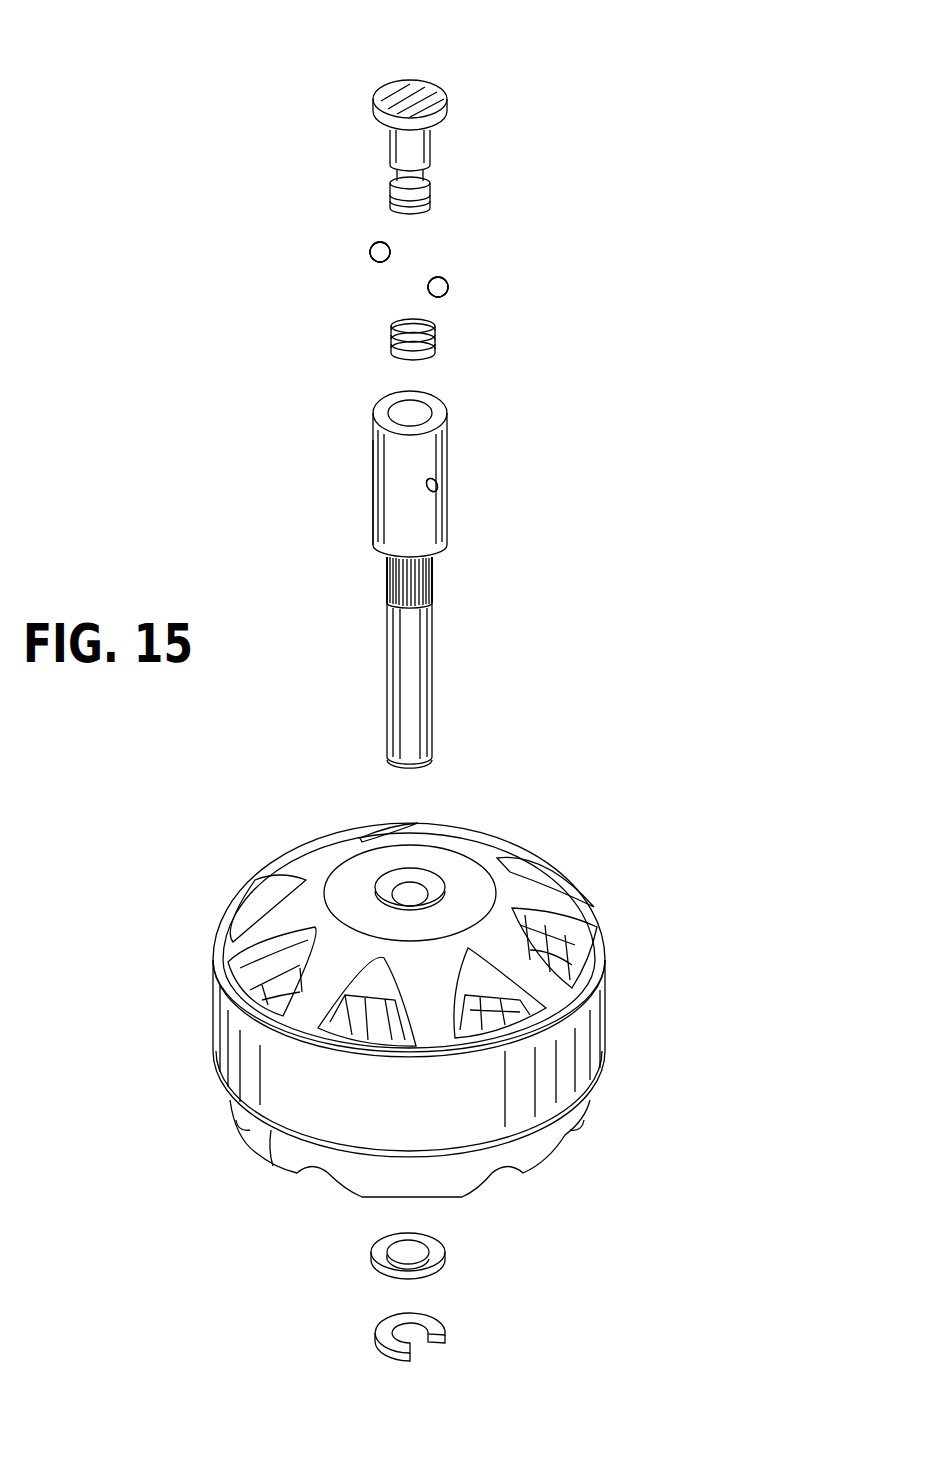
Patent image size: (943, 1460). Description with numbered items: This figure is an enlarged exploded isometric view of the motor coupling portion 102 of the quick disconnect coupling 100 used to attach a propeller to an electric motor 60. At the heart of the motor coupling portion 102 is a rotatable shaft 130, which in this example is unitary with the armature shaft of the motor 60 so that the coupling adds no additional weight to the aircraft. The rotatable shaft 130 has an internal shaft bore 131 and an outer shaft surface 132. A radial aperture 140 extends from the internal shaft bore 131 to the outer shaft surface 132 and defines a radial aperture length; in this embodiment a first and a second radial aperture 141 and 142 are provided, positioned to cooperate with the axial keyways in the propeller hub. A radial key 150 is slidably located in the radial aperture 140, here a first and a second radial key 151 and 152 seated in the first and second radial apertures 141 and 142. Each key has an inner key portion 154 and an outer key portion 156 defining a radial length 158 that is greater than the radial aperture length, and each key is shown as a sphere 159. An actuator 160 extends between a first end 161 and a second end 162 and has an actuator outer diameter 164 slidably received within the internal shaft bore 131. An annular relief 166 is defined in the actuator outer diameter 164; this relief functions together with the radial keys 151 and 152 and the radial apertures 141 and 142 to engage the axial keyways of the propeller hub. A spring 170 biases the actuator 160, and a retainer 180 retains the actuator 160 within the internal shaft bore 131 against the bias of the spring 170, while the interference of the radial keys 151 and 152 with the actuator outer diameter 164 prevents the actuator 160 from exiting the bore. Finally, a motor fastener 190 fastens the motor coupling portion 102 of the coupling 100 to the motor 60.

The electric motor 60 is at (605, 1008).
The coupling 100 is at (641, 264).
The motor coupling portion 102 is at (172, 480).
The rotatable shaft 130 is at (413, 574).
The internal shaft bore 131 is at (393, 410).
The outer shaft surface 132 is at (380, 523).
The radial aperture 140 is at (437, 490).
The first radial aperture 141 is at (437, 480).
The second radial aperture 142 is at (380, 463).
The radial key 150 is at (262, 308).
The first radial key 151 is at (445, 278).
The second radial key 152 is at (377, 245).
The inner key portion 154 is at (383, 260).
The outer key portion 156 is at (446, 296).
The radial length 158 is at (449, 287).
The sphere 159 is at (370, 252).
The actuator 160 is at (408, 118).
The first end 161 is at (393, 82).
The second end 162 is at (430, 205).
The actuator outer diameter 164 is at (390, 140).
The annular relief 166 is at (422, 172).
The spring 170 is at (392, 340).
The retainer 180 is at (380, 1250).
The motor fastener 190 is at (375, 1330).